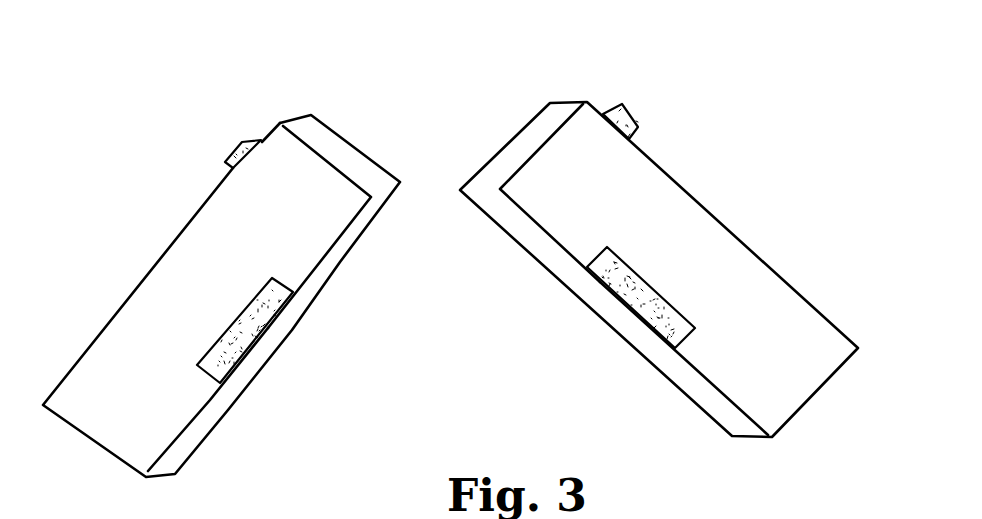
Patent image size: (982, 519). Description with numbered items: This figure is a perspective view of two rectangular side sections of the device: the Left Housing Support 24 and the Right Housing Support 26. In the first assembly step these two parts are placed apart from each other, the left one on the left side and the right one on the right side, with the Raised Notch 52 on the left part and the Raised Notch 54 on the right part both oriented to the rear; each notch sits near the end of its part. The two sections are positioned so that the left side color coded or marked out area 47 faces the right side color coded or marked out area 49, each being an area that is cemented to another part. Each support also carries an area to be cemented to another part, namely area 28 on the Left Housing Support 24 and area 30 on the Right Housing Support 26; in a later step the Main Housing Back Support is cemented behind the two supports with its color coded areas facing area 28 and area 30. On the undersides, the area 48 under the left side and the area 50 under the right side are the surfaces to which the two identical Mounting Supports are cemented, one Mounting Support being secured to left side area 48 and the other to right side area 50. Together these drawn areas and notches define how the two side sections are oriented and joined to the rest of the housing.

The Left Housing Support 24 is at (223, 313).
The Right Housing Support 26 is at (705, 300).
The Area on left Housing Support to be cemented to another part 28 is at (364, 174).
The Area on right Housing Support to be cemented to another part 30 is at (552, 120).
The Left side color coded or marked out area 47 is at (245, 329).
The Area under left side to be cemented to another part 48 is at (210, 413).
The Right side color coded or marked out area 49 is at (660, 322).
The Area under right side to be cemented to another part 50 is at (705, 397).
The Raised notch on left side 52 is at (258, 140).
The Raised notch on right side 54 is at (632, 108).